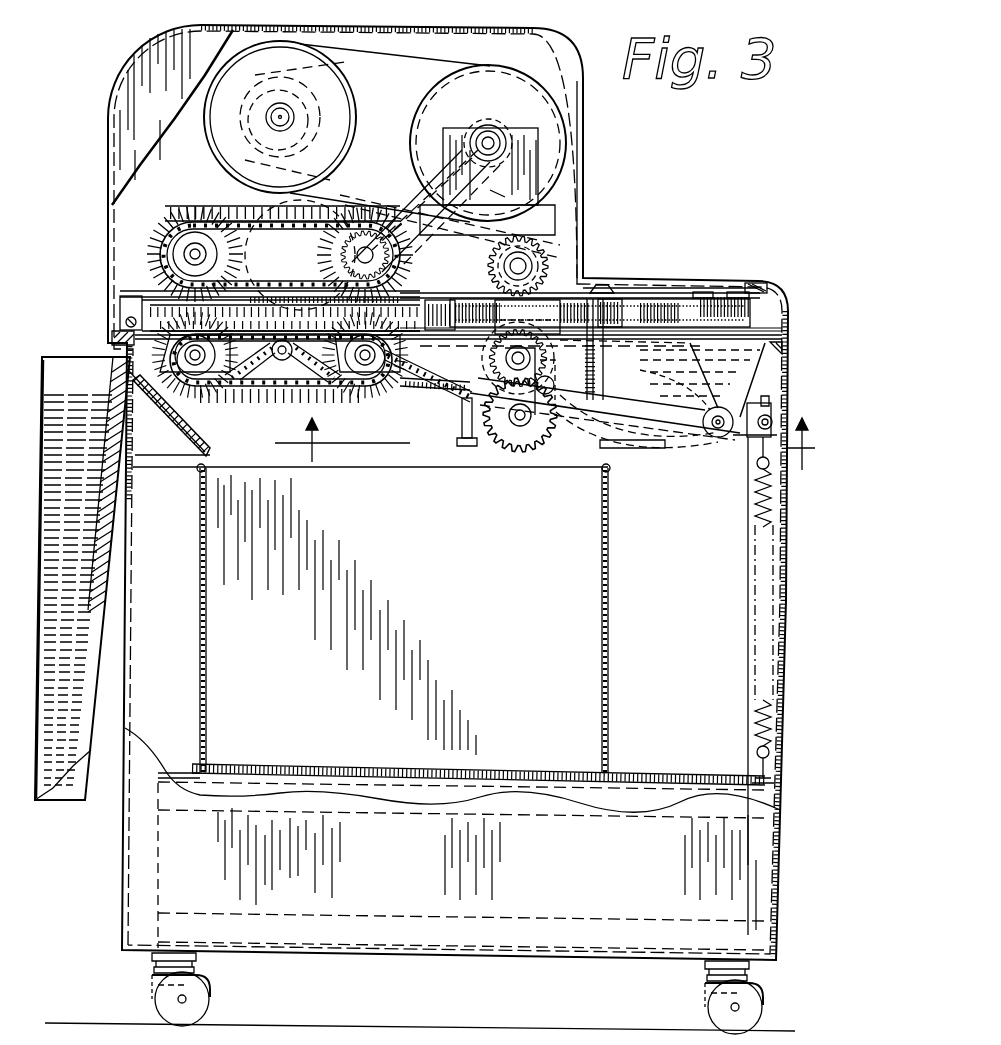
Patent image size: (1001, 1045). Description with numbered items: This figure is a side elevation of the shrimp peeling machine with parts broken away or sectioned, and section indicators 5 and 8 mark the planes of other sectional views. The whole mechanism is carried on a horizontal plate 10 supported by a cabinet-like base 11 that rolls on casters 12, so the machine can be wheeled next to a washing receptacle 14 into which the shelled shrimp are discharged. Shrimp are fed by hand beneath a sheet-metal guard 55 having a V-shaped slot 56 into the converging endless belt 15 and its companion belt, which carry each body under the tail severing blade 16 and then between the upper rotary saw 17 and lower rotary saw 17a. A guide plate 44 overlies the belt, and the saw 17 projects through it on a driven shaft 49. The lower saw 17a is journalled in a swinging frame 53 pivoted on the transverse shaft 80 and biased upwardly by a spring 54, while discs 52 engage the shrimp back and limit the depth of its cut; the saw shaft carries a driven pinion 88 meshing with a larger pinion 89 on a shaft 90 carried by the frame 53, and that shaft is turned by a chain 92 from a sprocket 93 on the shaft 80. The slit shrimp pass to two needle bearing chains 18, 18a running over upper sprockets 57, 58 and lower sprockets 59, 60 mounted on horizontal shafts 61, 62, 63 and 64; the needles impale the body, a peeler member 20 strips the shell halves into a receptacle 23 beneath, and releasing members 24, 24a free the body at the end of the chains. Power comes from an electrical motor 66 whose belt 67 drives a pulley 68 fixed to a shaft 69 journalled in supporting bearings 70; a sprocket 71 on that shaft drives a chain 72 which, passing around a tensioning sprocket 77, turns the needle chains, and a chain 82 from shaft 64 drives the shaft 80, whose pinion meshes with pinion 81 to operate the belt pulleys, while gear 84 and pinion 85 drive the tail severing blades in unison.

The section line 5- 5 is at (60, 268).
The section line 8- 8 is at (580, 219).
The horizontal plate 10 is at (476, 341).
The base or cabinet-like structure 11 is at (122, 858).
The casters 12 is at (210, 990).
The washing receptacle 14 is at (62, 802).
The endless belt 15 is at (655, 298).
The tail severing blade 16 is at (612, 298).
The rotary saw 17 is at (572, 288).
The rotary saw 17a is at (478, 381).
The needle bearing chain 18 is at (187, 222).
The needle bearing chain 18a is at (232, 390).
The peeler member 20 is at (132, 321).
The receptacle 23 is at (608, 550).
The releasing member 24 is at (128, 304).
The releasing member 24a is at (130, 344).
The guide plate 44 is at (440, 315).
The driven shaft 49 is at (492, 269).
The discs 52 is at (527, 317).
The swinging frame 53 is at (636, 442).
The spring 54 is at (748, 503).
The guard 55 is at (744, 282).
The V-shaped slot 56 is at (665, 292).
The upper sprocket 57 is at (368, 242).
The upper sprocket 58 is at (198, 222).
The lower sprocket 59 is at (195, 375).
The lower sprocket 60 is at (362, 376).
The horizontal shaft 61 is at (365, 256).
The horizontal shaft 62 is at (211, 254).
The horizontal shaft 63 is at (170, 398).
The horizontal shaft 64 is at (392, 382).
The electrical motor 66 is at (325, 62).
The belt 67 is at (410, 68).
The pulley 68 is at (428, 100).
The shaft 69 is at (490, 130).
The supporting bearings 70 is at (456, 140).
The sprocket 71 is at (495, 180).
The chain 72 is at (495, 196).
The tensioning sprocket 77 is at (282, 363).
The transverse shaft 80 is at (710, 433).
The pinion 81 is at (518, 368).
The chain 82 is at (426, 388).
The gear 84 is at (569, 345).
The pinion 85 is at (662, 378).
The driven pinion 88 is at (553, 386).
The larger pinion 89 is at (513, 448).
The shaft 90 is at (521, 428).
The chain 92 is at (626, 448).
The sprocket 93 is at (748, 436).